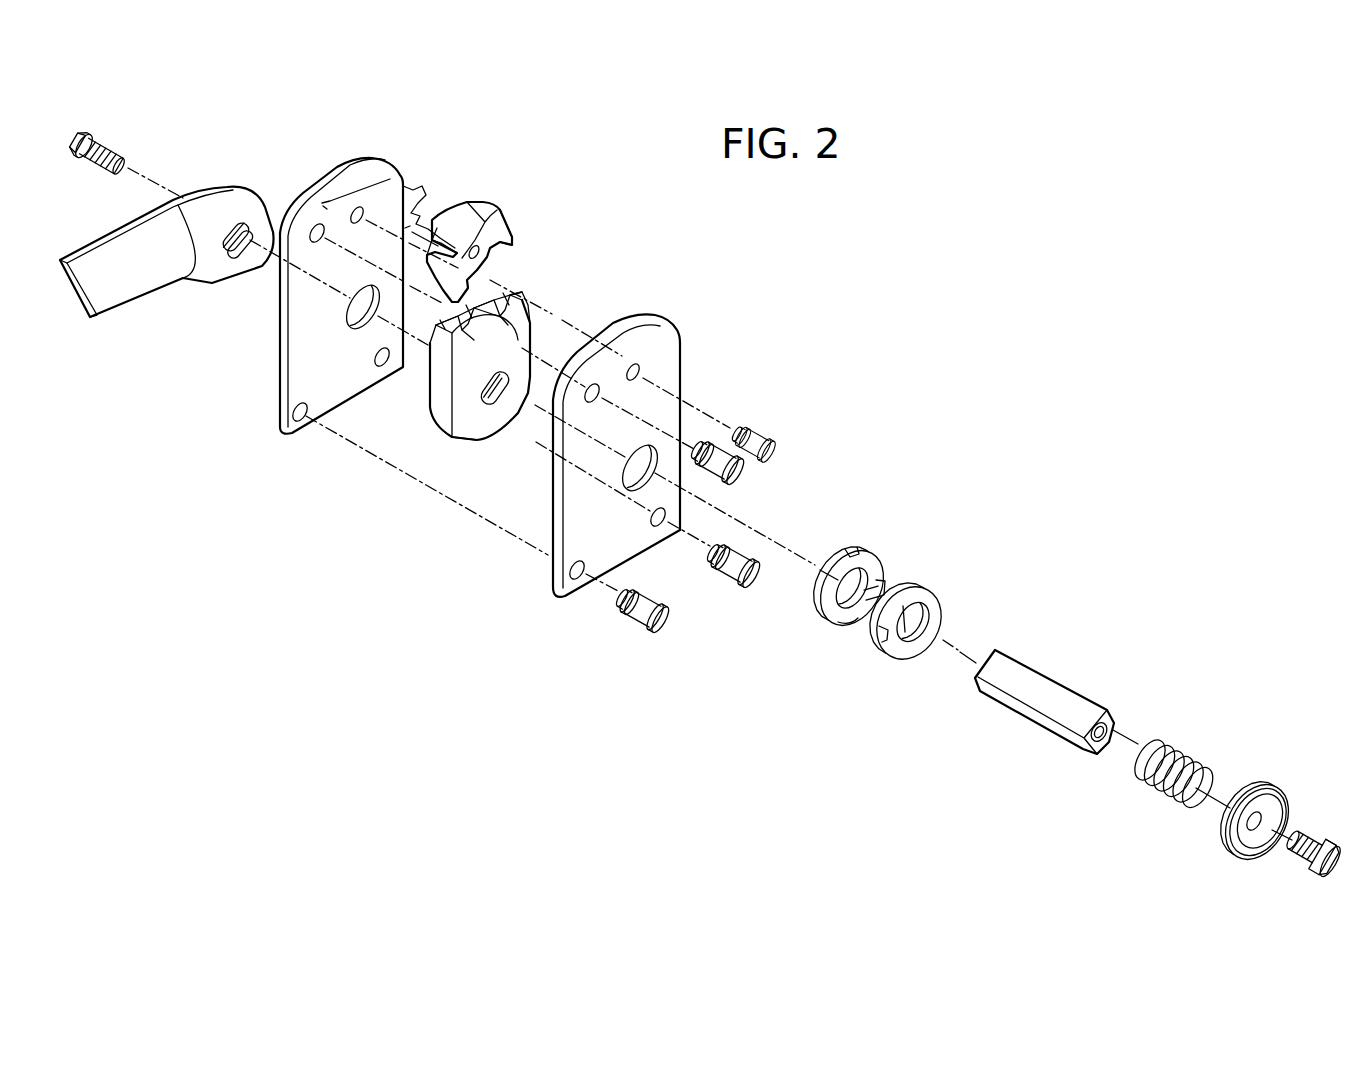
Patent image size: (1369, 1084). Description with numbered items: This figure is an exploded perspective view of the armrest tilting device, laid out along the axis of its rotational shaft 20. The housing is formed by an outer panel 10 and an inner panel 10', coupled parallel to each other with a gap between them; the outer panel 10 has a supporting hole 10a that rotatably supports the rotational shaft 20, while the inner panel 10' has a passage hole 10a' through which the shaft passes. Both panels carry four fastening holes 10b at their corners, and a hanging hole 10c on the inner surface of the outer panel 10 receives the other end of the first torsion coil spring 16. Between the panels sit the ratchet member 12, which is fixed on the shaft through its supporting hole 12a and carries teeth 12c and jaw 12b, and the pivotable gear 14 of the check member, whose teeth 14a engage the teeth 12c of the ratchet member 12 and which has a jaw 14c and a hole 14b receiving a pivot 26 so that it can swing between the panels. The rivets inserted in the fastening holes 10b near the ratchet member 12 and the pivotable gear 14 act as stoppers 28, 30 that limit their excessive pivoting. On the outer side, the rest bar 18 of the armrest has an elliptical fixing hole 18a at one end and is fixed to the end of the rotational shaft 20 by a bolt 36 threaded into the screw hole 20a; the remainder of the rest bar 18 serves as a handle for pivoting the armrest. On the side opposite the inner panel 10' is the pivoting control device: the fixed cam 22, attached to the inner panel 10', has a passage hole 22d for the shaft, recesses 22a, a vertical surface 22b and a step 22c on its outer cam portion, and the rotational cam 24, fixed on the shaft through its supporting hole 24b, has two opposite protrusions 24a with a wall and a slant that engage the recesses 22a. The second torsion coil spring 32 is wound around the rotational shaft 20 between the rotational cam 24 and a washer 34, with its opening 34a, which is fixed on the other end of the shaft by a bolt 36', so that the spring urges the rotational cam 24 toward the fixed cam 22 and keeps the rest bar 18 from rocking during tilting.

The outer panel 10 is at (349, 265).
The inner panel 10' is at (642, 437).
The supporting hole 10a is at (284, 327).
The passage hole 10a' is at (547, 534).
The fastening holes 10b is at (577, 580).
The hanging hole 10c is at (325, 202).
The ratchet member 12 is at (555, 328).
The supporting hole 12a is at (468, 430).
The jaw 12b is at (514, 290).
The teeth 12c is at (490, 432).
The pivotable gear 14 is at (497, 215).
The teeth 14a is at (430, 268).
The hole 14b is at (473, 243).
The jaw 14c is at (514, 243).
The first torsion coil spring 16 is at (428, 197).
The rest bar 18 is at (173, 278).
The elliptical fixing hole 18a is at (235, 222).
The rotational shaft 20 is at (1057, 690).
The screw hole 20a is at (1113, 716).
The fixed cam 22 is at (880, 540).
The recesses 22a is at (832, 574).
The vertical surface 22b is at (838, 607).
The step 22c is at (882, 582).
The passage hole 22d is at (845, 549).
The rotational cam 24 is at (948, 585).
The protrusions 24a is at (880, 627).
The supporting hole 24b is at (947, 623).
The pivot 26 is at (747, 433).
The stopper 28 is at (743, 555).
The stopper 30 is at (742, 479).
The second torsion coil spring 32 is at (1203, 762).
The washer 34 is at (1268, 788).
The disc hole 34a is at (1253, 831).
The bolt 36 is at (110, 136).
The bolt 36' is at (1321, 824).